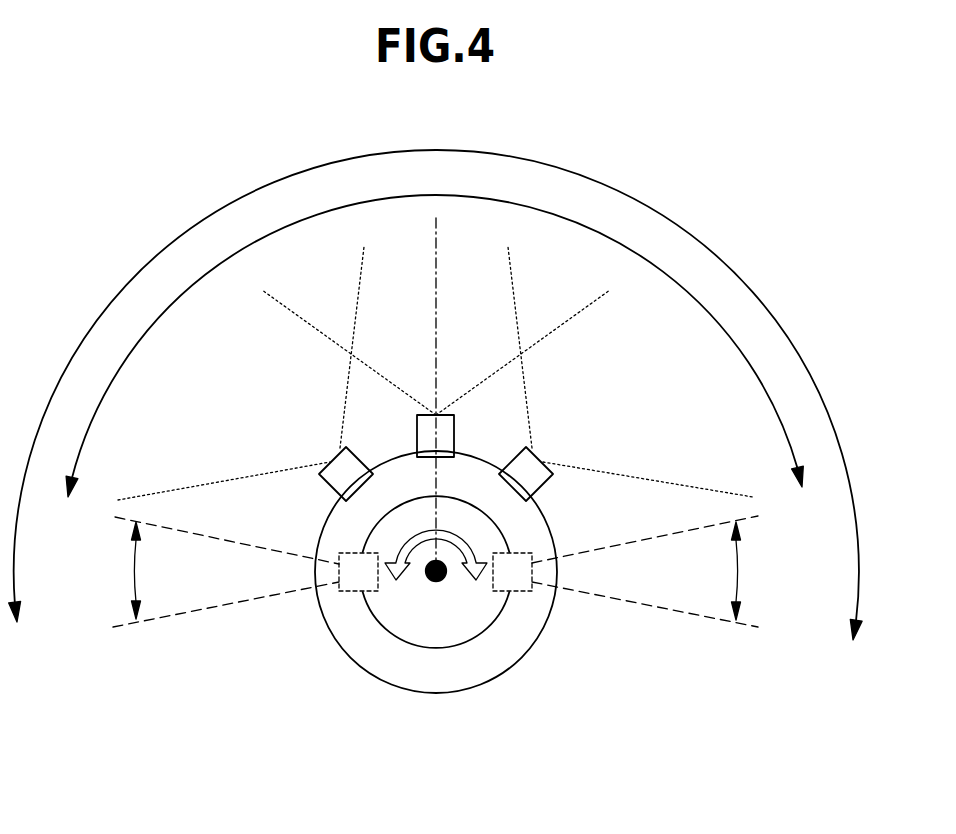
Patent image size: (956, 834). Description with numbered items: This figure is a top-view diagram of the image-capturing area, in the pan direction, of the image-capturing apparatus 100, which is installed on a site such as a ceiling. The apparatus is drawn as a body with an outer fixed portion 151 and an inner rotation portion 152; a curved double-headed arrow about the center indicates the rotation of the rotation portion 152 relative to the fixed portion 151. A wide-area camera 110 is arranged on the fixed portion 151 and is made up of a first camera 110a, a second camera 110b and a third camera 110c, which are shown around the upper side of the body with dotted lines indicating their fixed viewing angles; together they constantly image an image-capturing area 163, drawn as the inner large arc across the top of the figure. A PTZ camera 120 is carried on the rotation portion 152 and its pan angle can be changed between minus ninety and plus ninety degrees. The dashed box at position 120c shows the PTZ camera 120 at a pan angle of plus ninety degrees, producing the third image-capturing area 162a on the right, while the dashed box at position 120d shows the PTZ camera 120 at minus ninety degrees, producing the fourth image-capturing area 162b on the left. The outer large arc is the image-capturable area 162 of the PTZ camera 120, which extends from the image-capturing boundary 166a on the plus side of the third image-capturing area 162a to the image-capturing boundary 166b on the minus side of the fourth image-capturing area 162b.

The image-capturing apparatus 100 is at (416, 511).
The wide-area camera 110 is at (435, 384).
The first camera 110a is at (324, 485).
The second camera 110b is at (454, 435).
The third camera 110c is at (541, 488).
The PTZ camera 120 is at (403, 615).
The position of the PTZ camera at +90° pan angle 120c is at (533, 588).
The position of the PTZ camera at −90° pan angle 120d is at (340, 592).
The fixed portion 151 is at (333, 640).
The rotation portion 152 is at (385, 631).
The image-capturable area 162 is at (716, 257).
The image-capturing area 163 is at (747, 356).
The third image-capturing area 162a is at (741, 571).
The fourth image-capturing area 162b is at (132, 571).
The image-capturing boundary on the plus side 166a is at (672, 607).
The image-capturing boundary on the minus side 166b is at (154, 620).